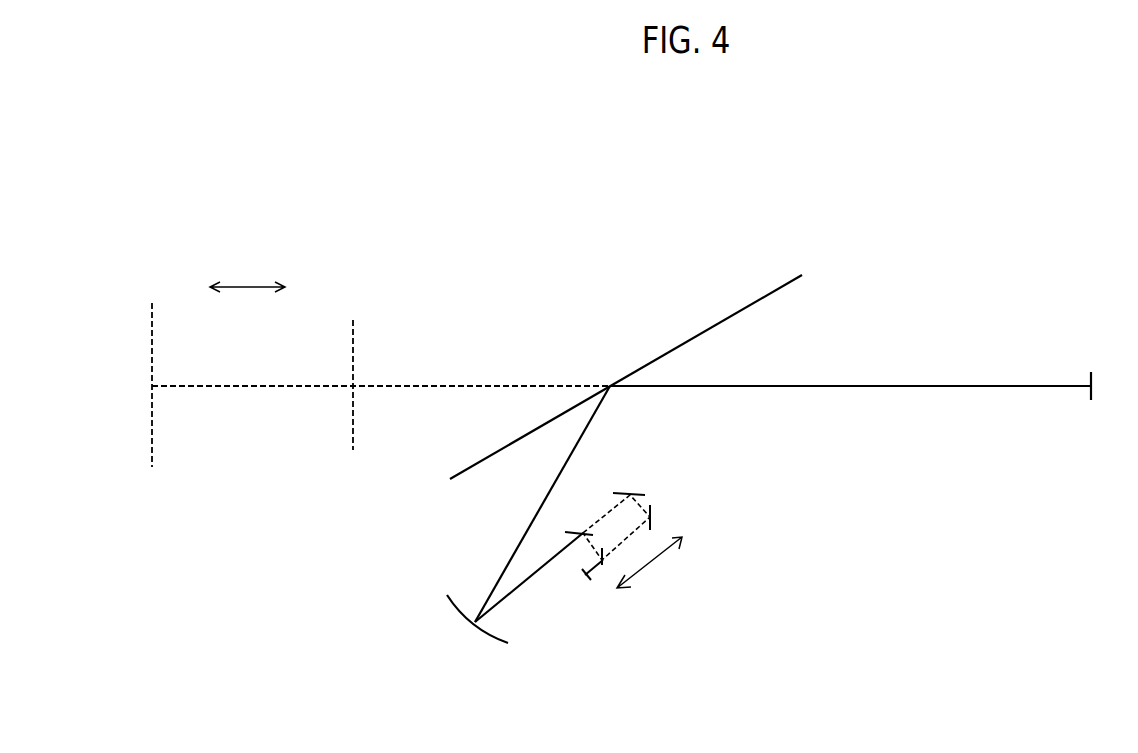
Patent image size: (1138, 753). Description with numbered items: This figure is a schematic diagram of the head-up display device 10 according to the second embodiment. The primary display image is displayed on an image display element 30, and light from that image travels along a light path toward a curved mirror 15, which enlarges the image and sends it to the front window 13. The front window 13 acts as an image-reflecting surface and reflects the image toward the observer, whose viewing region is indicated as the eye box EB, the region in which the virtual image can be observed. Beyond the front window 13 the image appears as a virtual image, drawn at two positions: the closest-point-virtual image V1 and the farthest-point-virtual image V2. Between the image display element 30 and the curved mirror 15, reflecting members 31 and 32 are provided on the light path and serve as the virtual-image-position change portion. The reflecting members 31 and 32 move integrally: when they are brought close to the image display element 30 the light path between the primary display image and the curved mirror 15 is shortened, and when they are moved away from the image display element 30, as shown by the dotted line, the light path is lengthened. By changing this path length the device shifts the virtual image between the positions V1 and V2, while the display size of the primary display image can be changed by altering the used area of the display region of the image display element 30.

The head-up display device 10 is at (675, 465).
The front window 13 is at (738, 312).
The curved mirror 15 is at (478, 633).
The image display element 30 is at (583, 577).
The reflecting member 31 is at (602, 567).
The reflecting member 32 is at (570, 533).
The eye box EB is at (1093, 375).
The closest-point-virtual image V1 is at (354, 337).
The farthest-point-virtual image V2 is at (153, 316).